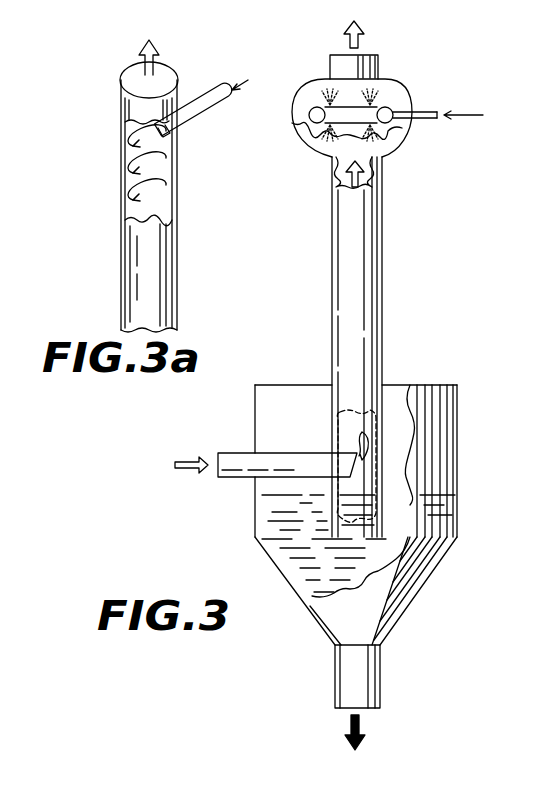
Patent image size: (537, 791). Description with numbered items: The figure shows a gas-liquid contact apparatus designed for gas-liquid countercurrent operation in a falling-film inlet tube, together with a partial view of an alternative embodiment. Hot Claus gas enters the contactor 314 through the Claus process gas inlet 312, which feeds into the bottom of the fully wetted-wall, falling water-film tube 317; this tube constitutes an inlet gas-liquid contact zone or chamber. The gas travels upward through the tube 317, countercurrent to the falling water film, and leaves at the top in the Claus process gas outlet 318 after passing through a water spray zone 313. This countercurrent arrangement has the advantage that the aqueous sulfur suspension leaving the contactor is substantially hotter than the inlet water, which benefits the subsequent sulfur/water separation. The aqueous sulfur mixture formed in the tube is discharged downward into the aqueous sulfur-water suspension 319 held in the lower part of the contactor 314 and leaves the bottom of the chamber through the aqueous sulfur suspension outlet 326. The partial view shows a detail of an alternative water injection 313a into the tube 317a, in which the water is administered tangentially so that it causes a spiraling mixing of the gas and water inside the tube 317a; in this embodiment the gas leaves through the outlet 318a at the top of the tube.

In FIG. 3, the Claus process gas inlet 312 is at (231, 453).
In FIG. 3, the water spray zone 313 is at (292, 124).
In FIG. 3a, the alternative water injection 313a is at (208, 120).
In FIG. 3, the contactor 314 is at (457, 434).
In FIG. 3, the falling water-film tube 317 is at (329, 262).
In FIG. 3a, the tube 317a is at (178, 265).
In FIG. 3, the Claus process gas outlet 318 is at (330, 70).
In FIG. 3a, the outlet 318a is at (177, 84).
In FIG. 3, the aqueous sulfur-water suspension 319 is at (278, 548).
In FIG. 3, the aqueous sulfur suspension outlet 326 is at (382, 684).